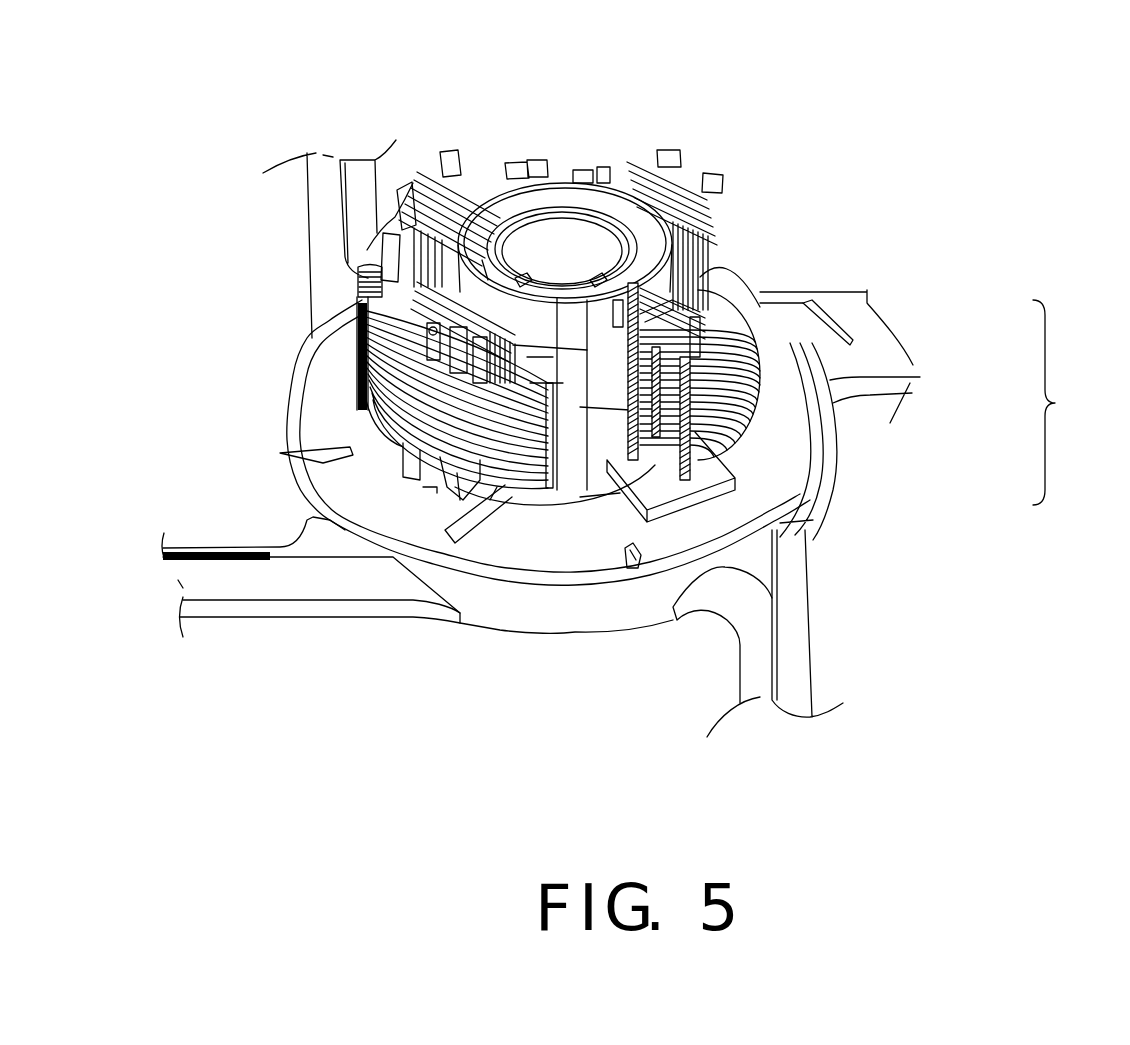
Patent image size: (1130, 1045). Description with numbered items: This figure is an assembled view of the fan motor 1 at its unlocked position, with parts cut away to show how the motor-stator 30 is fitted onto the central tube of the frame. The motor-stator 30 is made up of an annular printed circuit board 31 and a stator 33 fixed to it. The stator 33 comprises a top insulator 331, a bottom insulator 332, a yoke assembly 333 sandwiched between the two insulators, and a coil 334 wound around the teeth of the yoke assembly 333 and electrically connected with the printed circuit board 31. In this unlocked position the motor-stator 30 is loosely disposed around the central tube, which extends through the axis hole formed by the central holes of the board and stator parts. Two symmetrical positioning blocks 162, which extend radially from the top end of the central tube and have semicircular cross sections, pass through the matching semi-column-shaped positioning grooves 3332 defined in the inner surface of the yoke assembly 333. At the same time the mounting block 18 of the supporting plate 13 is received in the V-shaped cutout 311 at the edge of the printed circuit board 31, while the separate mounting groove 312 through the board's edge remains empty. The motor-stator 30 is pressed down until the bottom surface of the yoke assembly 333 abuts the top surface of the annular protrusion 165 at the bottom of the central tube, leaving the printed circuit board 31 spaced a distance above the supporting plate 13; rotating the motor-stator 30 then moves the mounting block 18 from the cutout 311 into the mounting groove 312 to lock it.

The fan motor 1 is at (592, 60).
The supporting plate 13 is at (549, 551).
The mounting block 18 is at (633, 568).
The motor-stator 30 is at (360, 377).
The printed circuit board 31 is at (350, 350).
The cutout 311 is at (500, 490).
The mounting groove 312 is at (283, 456).
The stator 33 is at (1071, 402).
The top insulator 331 is at (853, 345).
The bottom insulator 332 is at (722, 460).
The yoke assembly 333 is at (758, 407).
The coil 334 is at (803, 303).
The positioning groove 3332 is at (665, 320).
The positioning block 162 is at (625, 327).
The protrusion 165 is at (587, 480).